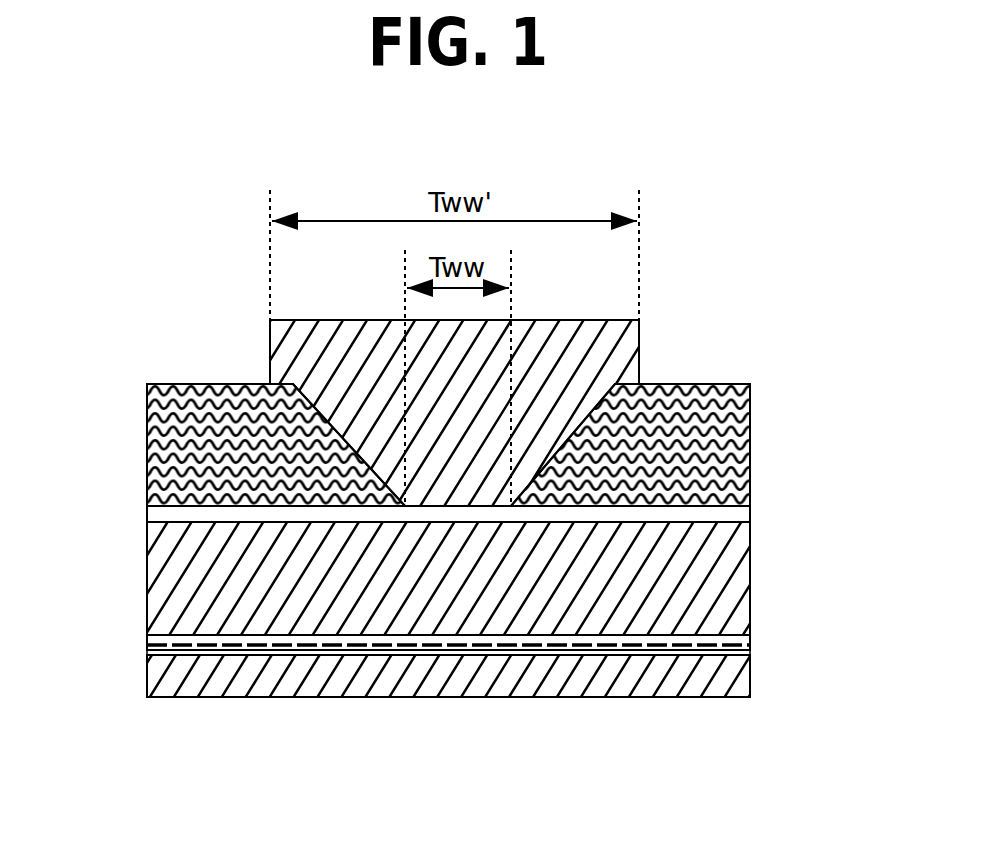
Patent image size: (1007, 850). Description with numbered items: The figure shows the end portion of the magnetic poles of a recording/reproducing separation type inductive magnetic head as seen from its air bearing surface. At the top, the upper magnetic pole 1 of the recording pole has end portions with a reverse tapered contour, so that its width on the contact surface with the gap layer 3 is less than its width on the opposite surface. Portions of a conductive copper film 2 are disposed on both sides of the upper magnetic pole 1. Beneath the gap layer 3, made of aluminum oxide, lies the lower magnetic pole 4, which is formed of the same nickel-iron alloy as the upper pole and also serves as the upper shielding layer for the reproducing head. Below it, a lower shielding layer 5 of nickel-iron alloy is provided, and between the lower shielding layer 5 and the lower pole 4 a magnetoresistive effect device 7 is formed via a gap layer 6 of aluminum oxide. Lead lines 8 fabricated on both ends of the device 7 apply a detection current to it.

The upper magnetic pole 1 is at (540, 380).
The conductive copper film 2 is at (162, 434).
The gap layer 3 is at (735, 515).
The lower magnetic pole 4 is at (713, 601).
The lower shielding layer 5 is at (678, 681).
The gap layer 6 is at (716, 647).
The magnetoresistive effect device 7 is at (443, 645).
The lead lines 8 is at (750, 650).